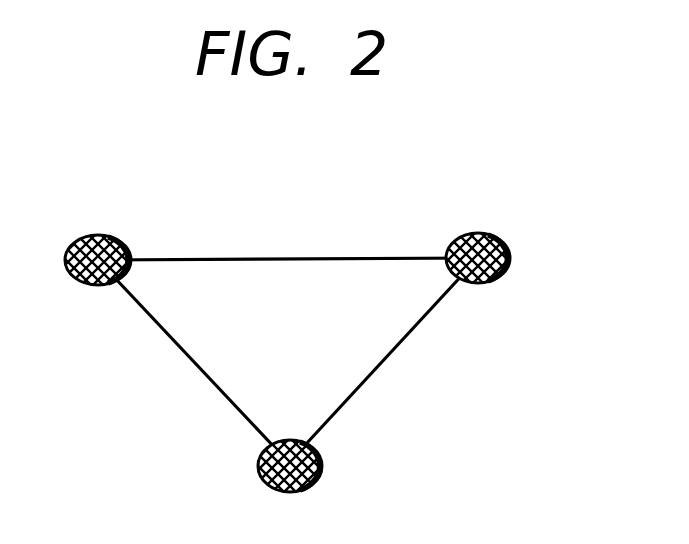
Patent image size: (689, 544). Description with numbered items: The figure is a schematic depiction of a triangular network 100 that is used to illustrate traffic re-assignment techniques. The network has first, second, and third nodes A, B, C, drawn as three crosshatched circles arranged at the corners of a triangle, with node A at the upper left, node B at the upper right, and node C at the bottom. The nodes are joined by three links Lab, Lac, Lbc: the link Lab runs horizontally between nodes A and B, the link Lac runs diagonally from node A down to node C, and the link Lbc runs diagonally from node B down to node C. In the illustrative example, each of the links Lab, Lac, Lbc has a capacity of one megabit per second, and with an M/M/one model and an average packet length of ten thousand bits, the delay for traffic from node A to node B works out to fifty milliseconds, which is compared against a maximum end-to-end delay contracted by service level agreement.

The triangular network 100 is at (497, 190).
The first node A is at (113, 277).
The second node B is at (478, 274).
The third node C is at (290, 482).
The link Lab is at (288, 239).
The link Lac is at (195, 363).
The link Lbc is at (380, 364).